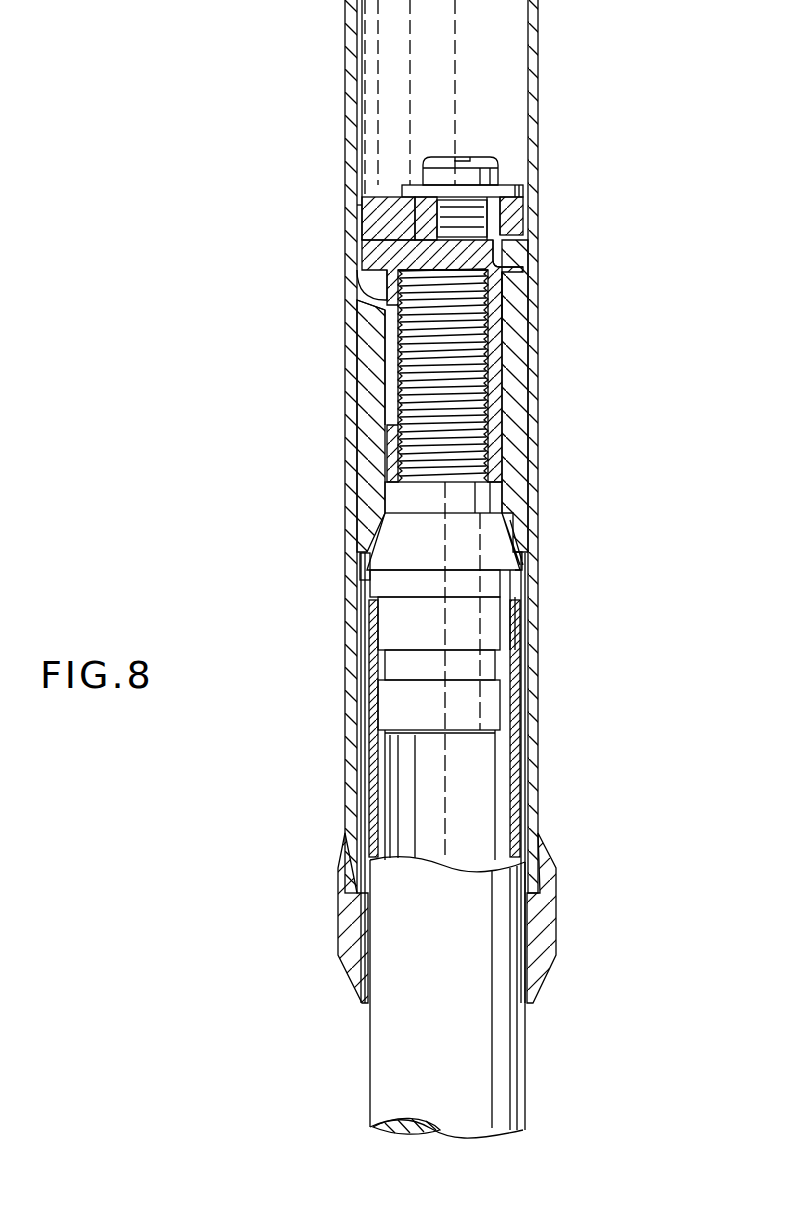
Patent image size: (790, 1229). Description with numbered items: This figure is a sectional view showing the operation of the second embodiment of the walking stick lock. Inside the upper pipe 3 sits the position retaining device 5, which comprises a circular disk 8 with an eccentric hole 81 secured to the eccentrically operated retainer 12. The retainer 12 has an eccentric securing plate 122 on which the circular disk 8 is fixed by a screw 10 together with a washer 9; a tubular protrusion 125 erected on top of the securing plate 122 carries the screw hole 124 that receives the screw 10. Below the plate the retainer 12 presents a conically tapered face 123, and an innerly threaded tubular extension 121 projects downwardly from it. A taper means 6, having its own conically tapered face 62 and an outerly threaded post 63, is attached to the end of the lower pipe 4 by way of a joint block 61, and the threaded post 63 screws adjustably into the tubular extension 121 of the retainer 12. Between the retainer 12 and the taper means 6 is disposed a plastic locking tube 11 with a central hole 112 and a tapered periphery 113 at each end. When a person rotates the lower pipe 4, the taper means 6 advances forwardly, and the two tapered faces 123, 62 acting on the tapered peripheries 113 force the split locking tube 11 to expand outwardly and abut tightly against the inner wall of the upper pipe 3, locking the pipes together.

The upper pipe 3 is at (532, 62).
The lower pipe 4 is at (392, 1043).
The position retaining device 5 is at (360, 212).
The taper means 6 is at (393, 625).
The circular disk 8 is at (510, 228).
The washer 9 is at (518, 195).
The screw 10 is at (498, 158).
The plastic locking tube 11 is at (512, 458).
The eccentrically operated retainer 12 is at (362, 258).
The joint block 61 is at (500, 710).
The conically tapered face 62 is at (495, 540).
The outerly threaded post 63 is at (470, 378).
The eccentric hole 81 is at (498, 262).
The central hole 112 is at (360, 407).
The tapered periphery 113 is at (358, 280).
The innerly threaded tubular extension 121 is at (358, 315).
The eccentric securing plate 122 is at (362, 222).
The conically tapered face 123 is at (520, 310).
The screw hole 124 is at (445, 205).
The tubular protrusion 125 is at (392, 197).